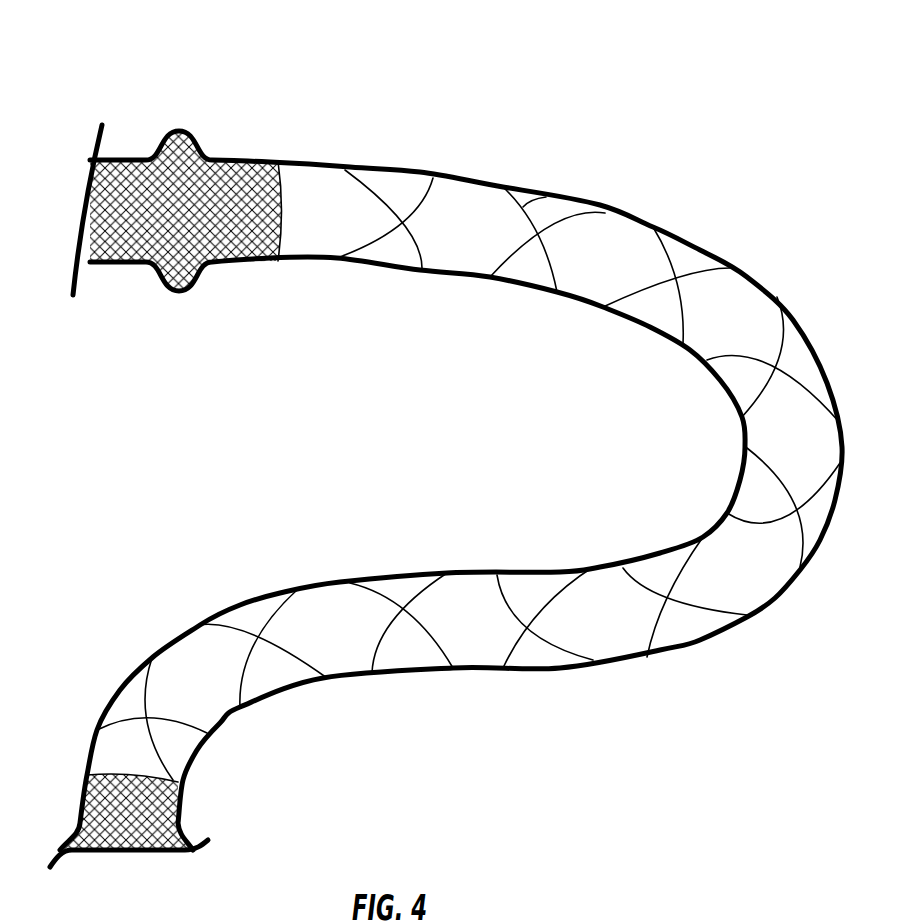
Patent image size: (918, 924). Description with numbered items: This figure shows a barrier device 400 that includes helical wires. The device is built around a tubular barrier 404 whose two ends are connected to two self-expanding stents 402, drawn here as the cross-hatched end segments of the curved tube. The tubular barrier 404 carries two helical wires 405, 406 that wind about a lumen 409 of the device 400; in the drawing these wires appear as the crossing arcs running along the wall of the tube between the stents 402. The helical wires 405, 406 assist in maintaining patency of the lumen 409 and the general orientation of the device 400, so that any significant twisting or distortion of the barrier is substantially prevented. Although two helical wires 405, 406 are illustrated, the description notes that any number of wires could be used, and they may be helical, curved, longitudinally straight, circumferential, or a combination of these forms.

The barrier device 400 is at (291, 84).
The self-expanding stents 402 is at (247, 247).
The tubular barrier 404 is at (450, 218).
The helical wire 405 is at (552, 187).
The helical wire 406 is at (575, 215).
The lumen 409 is at (737, 305).